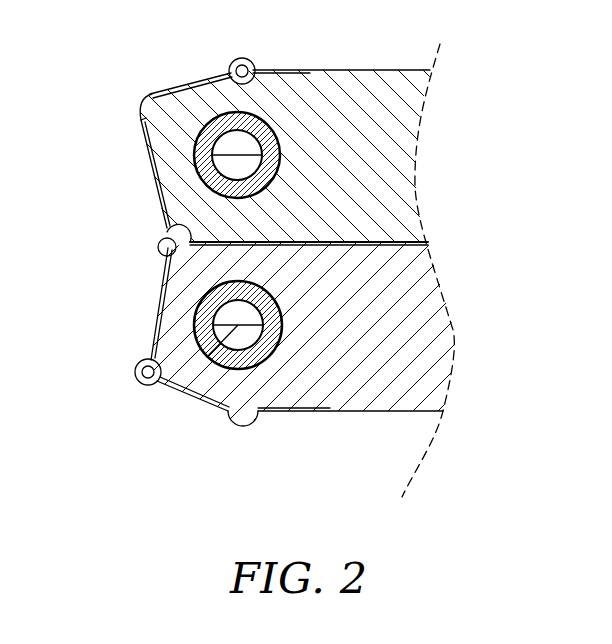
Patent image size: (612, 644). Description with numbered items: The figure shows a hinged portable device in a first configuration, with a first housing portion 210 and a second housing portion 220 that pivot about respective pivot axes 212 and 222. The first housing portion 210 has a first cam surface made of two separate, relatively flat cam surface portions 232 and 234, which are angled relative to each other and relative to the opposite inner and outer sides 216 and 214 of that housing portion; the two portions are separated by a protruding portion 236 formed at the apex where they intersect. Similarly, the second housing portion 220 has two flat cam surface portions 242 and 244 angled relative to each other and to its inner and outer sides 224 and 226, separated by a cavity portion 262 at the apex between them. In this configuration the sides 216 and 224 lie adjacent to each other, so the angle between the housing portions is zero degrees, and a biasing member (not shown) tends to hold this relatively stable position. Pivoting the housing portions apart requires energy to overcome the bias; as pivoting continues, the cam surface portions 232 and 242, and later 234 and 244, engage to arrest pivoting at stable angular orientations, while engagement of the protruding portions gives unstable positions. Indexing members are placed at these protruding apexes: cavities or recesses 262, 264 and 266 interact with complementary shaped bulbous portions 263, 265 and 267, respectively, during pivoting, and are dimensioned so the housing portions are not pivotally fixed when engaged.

The first housing portion 210 is at (417, 137).
The pivot axis 212 is at (240, 155).
The outer side 214 is at (399, 70).
The inner side 216 is at (392, 245).
The second housing portion 220 is at (460, 358).
The pivot axis 222 is at (204, 364).
The inner side 224 is at (388, 241).
The outer side 226 is at (395, 412).
The cam surface portion 232 is at (154, 183).
The cam surface portion 234 is at (188, 79).
The protruding portion 236 is at (150, 98).
The cam surface portion 242 is at (152, 318).
The cam surface portion 244 is at (170, 392).
The cavity portion 262 is at (146, 360).
The bulbous portion 263 is at (135, 110).
The cavity 264 is at (165, 218).
The bulbous portion 265 is at (166, 252).
The cavity 266 is at (270, 46).
The bulbous portion 267 is at (243, 426).